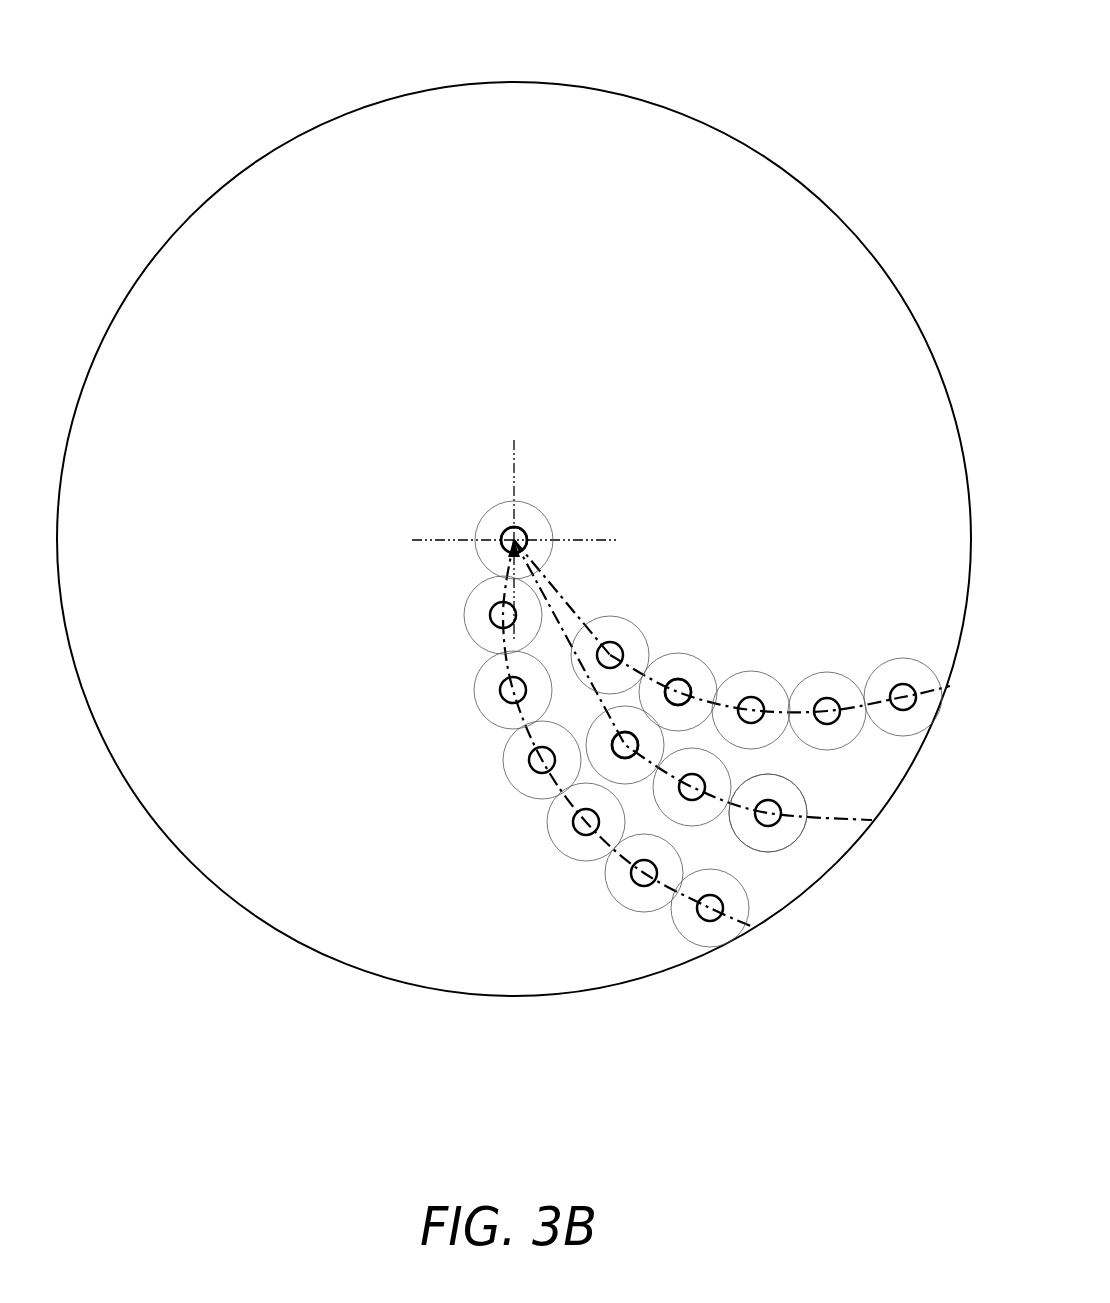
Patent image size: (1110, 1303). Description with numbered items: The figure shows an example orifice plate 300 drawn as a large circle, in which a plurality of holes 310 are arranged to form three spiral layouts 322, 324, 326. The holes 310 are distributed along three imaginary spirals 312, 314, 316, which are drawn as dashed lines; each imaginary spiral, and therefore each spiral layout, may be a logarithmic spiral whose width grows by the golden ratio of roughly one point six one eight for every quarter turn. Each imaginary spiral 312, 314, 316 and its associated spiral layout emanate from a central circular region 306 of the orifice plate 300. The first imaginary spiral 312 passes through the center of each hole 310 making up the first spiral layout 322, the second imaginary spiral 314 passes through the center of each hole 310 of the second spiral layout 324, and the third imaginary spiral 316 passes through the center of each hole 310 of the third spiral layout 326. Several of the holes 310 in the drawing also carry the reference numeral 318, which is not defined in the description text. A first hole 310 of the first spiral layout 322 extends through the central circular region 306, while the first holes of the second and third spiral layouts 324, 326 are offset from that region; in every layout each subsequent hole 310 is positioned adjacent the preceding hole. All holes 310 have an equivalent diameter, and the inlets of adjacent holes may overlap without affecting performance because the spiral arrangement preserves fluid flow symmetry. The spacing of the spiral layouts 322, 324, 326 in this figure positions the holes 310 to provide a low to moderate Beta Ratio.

The orifice plate 300 is at (292, 96).
The central circular region 306 is at (524, 496).
The holes 310 is at (542, 512).
The first imaginary spiral 312 is at (500, 590).
The second imaginary spiral 314 is at (847, 822).
The third imaginary spiral 316 is at (553, 600).
The measurement site centers 318 is at (478, 547).
The first spiral layout 322 is at (642, 902).
The second spiral layout 324 is at (770, 840).
The third spiral layout 326 is at (755, 685).